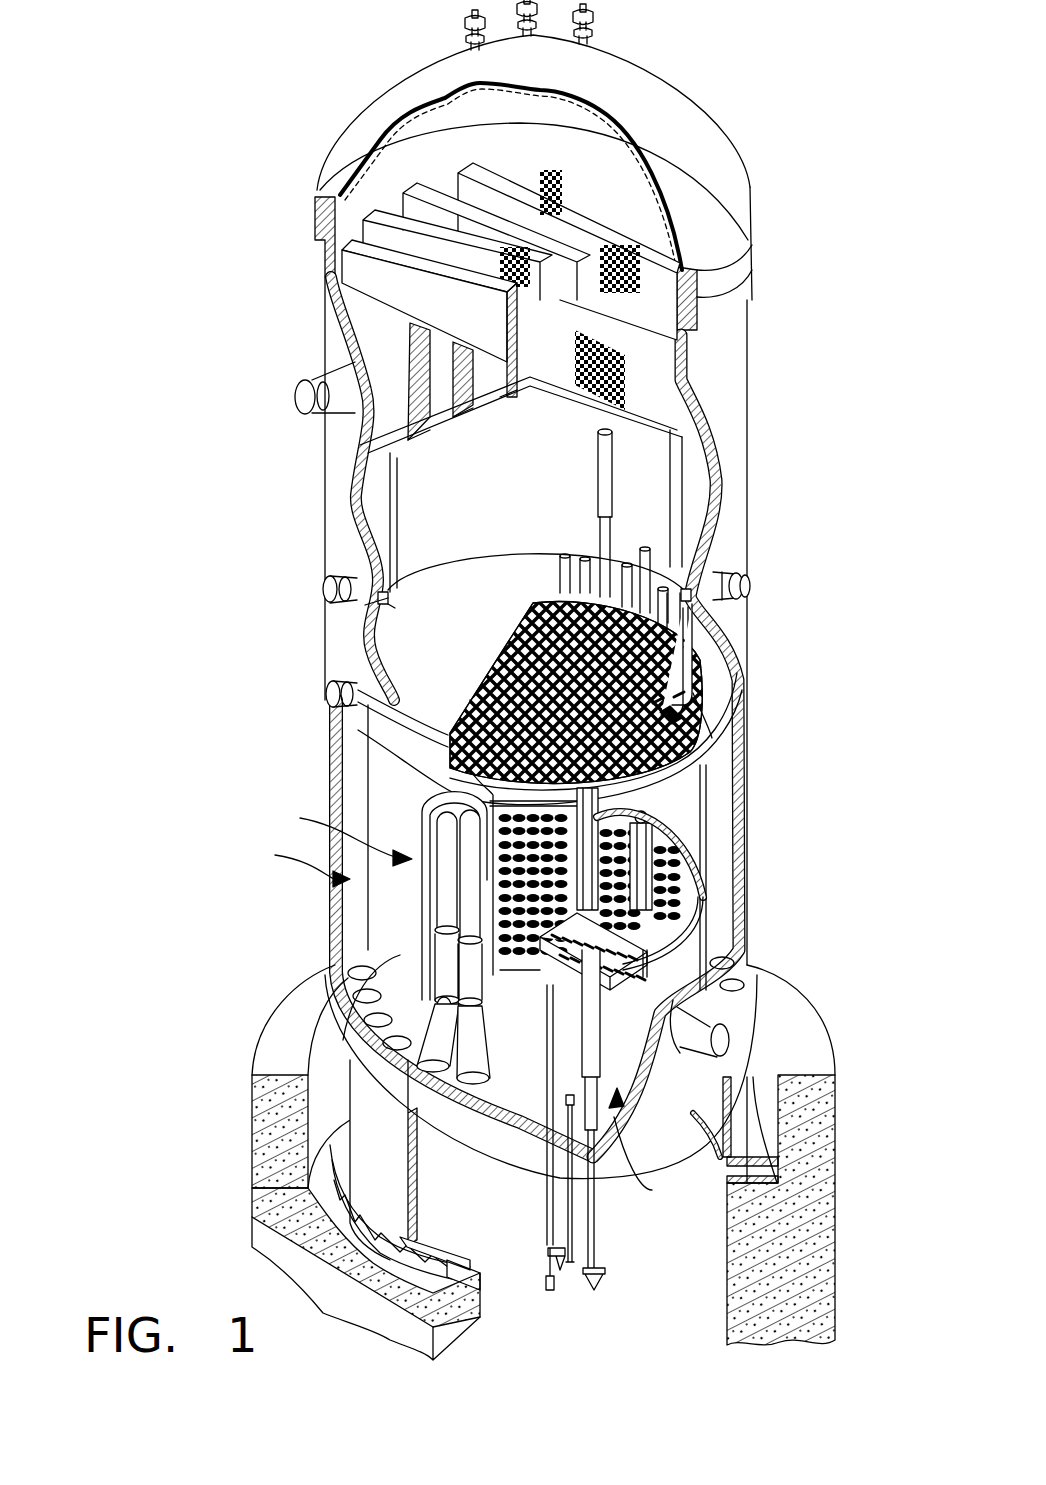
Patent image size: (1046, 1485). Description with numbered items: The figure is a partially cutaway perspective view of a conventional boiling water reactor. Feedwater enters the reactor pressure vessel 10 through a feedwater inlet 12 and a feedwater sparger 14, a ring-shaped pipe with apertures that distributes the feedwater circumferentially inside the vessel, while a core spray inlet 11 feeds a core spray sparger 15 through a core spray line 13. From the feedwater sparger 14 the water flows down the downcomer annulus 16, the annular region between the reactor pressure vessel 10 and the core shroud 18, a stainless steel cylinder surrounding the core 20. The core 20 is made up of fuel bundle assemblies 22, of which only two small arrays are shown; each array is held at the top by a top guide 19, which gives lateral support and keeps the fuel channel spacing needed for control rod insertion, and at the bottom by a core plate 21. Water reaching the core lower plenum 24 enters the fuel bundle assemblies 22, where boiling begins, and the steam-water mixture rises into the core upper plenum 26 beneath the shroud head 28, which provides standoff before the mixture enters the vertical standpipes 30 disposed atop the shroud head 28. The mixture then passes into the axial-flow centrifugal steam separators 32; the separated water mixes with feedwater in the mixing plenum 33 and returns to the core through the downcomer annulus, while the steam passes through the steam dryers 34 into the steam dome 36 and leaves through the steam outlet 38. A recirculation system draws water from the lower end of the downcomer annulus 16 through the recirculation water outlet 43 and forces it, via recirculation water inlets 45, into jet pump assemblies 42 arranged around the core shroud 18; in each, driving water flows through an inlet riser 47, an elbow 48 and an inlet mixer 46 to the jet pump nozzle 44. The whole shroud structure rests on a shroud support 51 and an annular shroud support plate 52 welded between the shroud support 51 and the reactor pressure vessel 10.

The reactor pressure vessel 10 is at (337, 907).
The core spray inlet 11 is at (323, 590).
The feedwater inlet 12 is at (750, 588).
The core spray line 13 is at (688, 692).
The feedwater sparger 14 is at (686, 591).
The core spray sparger 15 is at (697, 740).
The downcomer annulus 16 is at (293, 863).
The core shroud 18 is at (378, 770).
The top guide 19 is at (686, 664).
The core 20 is at (688, 816).
The core plate 21 is at (686, 891).
The fuel bundle assemblies 22 is at (607, 803).
The core lower plenum 24 is at (615, 1120).
The core upper plenum 26 is at (540, 605).
The shroud head 28 is at (482, 557).
The vertical standpipes 30 is at (648, 557).
The steam separators 32 is at (605, 455).
The mixing plenum 33 is at (566, 487).
The steam dryers 34 is at (530, 325).
The steam dome 36 is at (443, 113).
The steam outlet 38 is at (300, 388).
The jet pump assemblies 42 is at (336, 834).
The recirculation water outlet 43 is at (730, 1040).
The jet pump nozzle 44 is at (433, 1057).
The recirculation water inlets 45 is at (448, 1010).
The inlet mixer 46 is at (430, 847).
The inlet riser 47 is at (452, 905).
The elbow 48 is at (425, 805).
The shroud support 51 is at (388, 970).
The annular shroud support plate 52 is at (330, 985).